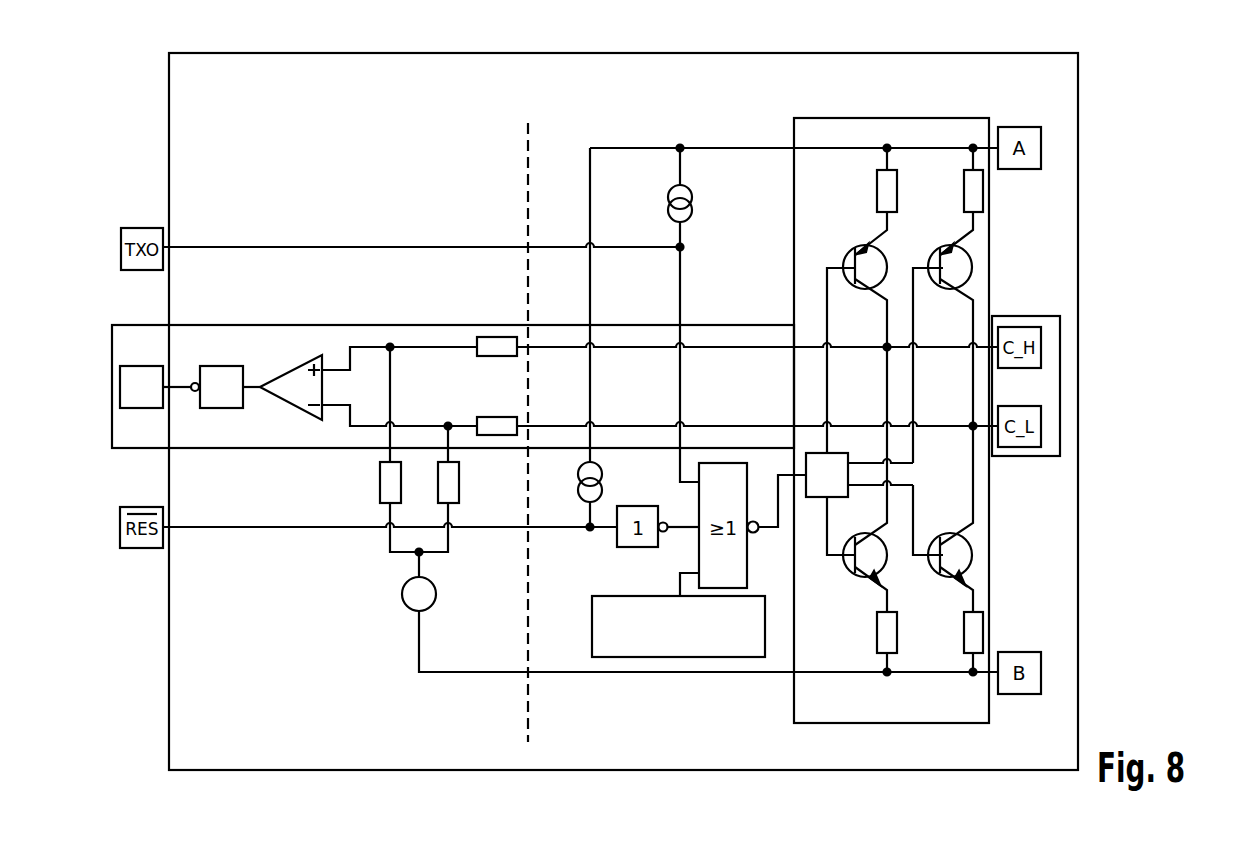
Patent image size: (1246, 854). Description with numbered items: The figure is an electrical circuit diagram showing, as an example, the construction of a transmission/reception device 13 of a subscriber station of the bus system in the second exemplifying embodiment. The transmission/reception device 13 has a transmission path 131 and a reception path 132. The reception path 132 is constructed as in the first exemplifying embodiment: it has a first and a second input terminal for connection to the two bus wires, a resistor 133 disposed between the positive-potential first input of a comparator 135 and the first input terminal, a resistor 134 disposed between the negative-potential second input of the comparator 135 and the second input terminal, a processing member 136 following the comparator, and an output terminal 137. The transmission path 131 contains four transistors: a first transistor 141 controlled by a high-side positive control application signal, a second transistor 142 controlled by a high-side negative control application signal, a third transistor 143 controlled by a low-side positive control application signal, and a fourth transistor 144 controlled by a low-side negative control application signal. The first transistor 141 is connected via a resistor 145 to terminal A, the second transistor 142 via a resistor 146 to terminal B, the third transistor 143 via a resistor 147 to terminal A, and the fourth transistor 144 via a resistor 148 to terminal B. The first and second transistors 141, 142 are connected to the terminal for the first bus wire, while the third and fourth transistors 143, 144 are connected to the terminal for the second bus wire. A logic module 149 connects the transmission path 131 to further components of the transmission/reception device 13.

The transmission/reception device 13 is at (1078, 75).
The transmission path 131 is at (890, 118).
The reception path 132 is at (112, 333).
The resistor 133 is at (495, 337).
The resistor 134 is at (495, 435).
The comparator 135 is at (290, 370).
The processing member 136 is at (221, 366).
The output terminal 137 is at (120, 387).
The first transistor 141 is at (862, 247).
The second transistor 142 is at (862, 577).
The third transistor 143 is at (972, 267).
The fourth transistor 144 is at (972, 555).
The resistor 145 is at (897, 190).
The resistor 146 is at (897, 632).
The resistor 147 is at (983, 190).
The resistor 148 is at (983, 632).
The logic module 149 is at (833, 453).